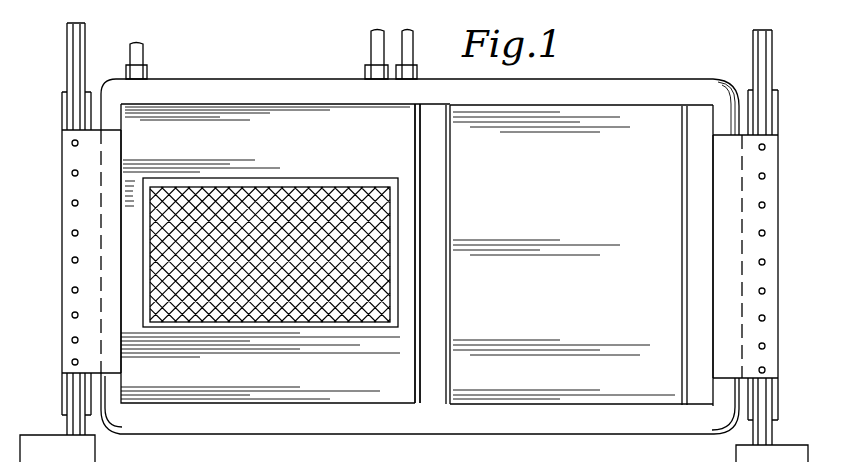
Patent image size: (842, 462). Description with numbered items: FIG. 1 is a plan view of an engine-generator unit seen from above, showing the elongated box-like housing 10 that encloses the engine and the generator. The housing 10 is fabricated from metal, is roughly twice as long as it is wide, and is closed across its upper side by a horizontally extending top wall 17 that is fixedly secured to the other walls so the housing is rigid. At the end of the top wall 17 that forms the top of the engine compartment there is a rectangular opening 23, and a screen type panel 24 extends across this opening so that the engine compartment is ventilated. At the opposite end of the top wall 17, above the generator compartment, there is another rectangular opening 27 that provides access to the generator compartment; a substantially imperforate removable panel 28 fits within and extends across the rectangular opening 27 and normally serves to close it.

The housing 10 is at (377, 433).
The top wall 17 is at (437, 301).
The rectangular opening 23 is at (270, 404).
The screen type panel 24 is at (331, 322).
The rectangular opening 27 is at (507, 407).
The removable panel 28 is at (558, 392).